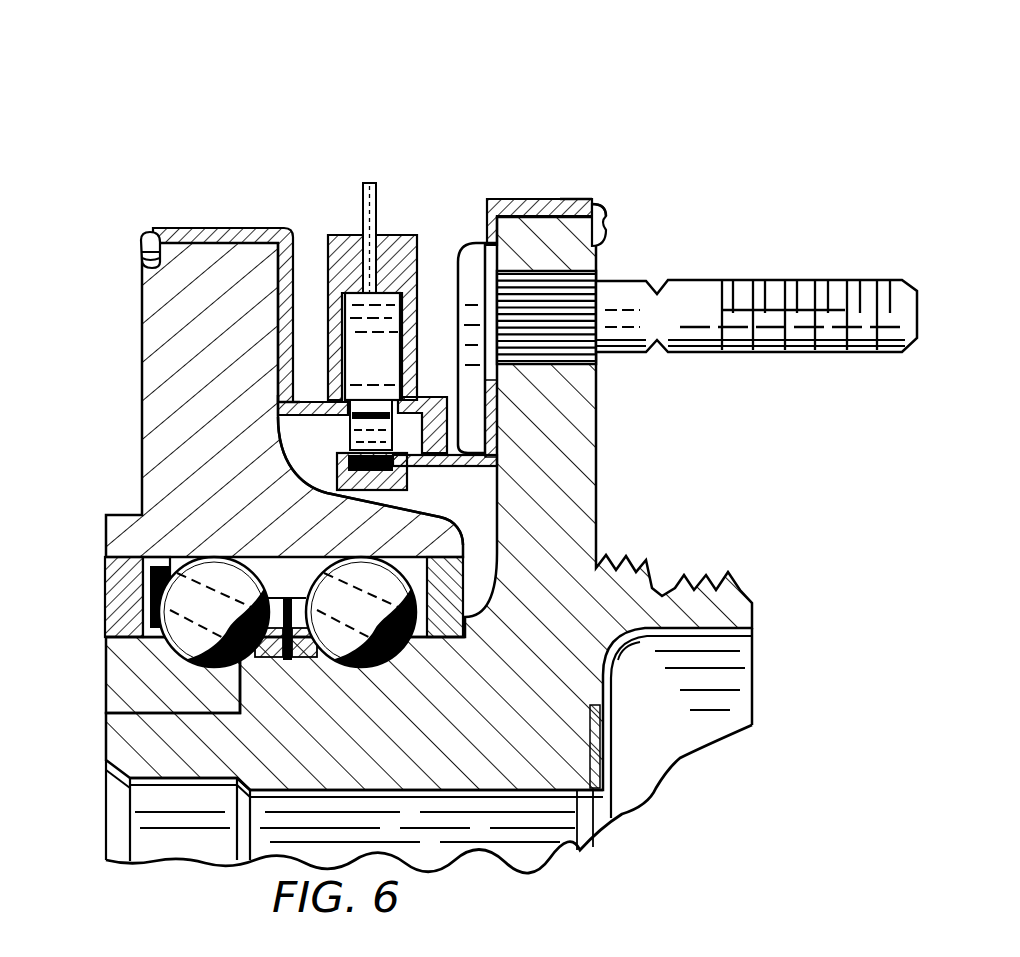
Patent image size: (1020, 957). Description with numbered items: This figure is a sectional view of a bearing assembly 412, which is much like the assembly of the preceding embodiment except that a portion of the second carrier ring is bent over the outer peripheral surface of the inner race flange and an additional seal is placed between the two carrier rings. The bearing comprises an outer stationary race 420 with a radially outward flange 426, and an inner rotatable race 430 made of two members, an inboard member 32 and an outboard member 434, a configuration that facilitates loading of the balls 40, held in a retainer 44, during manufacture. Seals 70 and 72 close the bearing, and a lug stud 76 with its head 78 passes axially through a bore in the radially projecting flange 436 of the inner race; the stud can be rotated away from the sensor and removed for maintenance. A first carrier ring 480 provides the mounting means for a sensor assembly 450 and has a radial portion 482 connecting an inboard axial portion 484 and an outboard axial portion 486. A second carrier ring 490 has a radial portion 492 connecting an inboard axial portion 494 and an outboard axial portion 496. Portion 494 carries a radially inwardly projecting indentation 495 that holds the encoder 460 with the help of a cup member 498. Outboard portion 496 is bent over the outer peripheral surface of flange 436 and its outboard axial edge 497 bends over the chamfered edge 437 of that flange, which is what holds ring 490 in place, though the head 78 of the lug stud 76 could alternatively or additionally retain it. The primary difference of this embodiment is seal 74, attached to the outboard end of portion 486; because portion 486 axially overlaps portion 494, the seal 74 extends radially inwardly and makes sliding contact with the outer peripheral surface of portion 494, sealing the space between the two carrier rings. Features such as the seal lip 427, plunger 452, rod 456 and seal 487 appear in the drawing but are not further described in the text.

The bearing assembly 412 is at (392, 276).
The outer stationary race 420 is at (257, 348).
The flange 426 is at (142, 336).
The seal lip 427 is at (140, 262).
The inner rotatable race 430 is at (522, 800).
The outboard member 434 is at (106, 748).
The flange 436 is at (600, 382).
The chamfered edge 437 is at (608, 242).
The sensor assembly 450 is at (399, 295).
The plunger 452 is at (372, 371).
The plunger rod 456 is at (380, 205).
The encoder 460 is at (407, 472).
The first carrier ring 480 is at (204, 277).
The radial portion 482 is at (303, 262).
The inboard axial portion 484 is at (263, 230).
The outboard axial portion 486 is at (284, 390).
The seal 487 is at (150, 240).
The second carrier ring 490 is at (587, 176).
The radial portion 492 is at (508, 216).
The inboard axial portion 494 is at (500, 434).
The indentation 495 is at (358, 503).
The outboard axial portion 496 is at (584, 202).
The outboard axial edge 497 is at (607, 212).
The cup member 498 is at (345, 470).
The inboard member 32 is at (105, 682).
The balls 40 is at (360, 558).
The retainer 44 is at (168, 568).
The seal 70 is at (104, 592).
The seal 72 is at (464, 590).
The seal 74 is at (443, 395).
The lug stud 76 is at (855, 278).
The head 78 is at (460, 282).